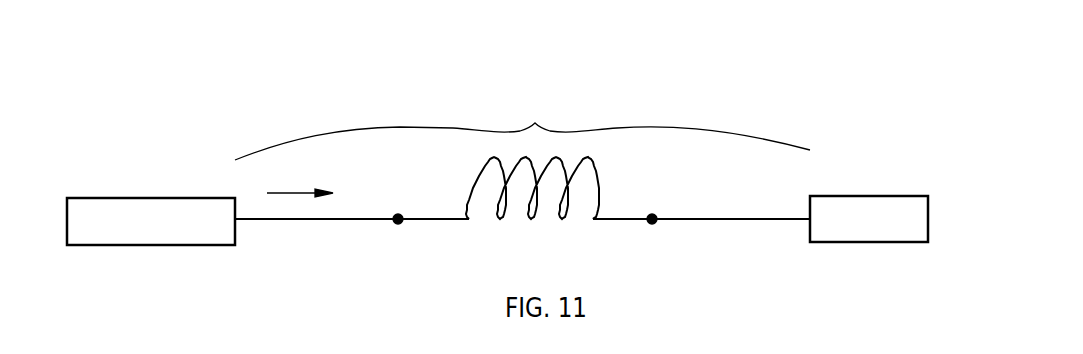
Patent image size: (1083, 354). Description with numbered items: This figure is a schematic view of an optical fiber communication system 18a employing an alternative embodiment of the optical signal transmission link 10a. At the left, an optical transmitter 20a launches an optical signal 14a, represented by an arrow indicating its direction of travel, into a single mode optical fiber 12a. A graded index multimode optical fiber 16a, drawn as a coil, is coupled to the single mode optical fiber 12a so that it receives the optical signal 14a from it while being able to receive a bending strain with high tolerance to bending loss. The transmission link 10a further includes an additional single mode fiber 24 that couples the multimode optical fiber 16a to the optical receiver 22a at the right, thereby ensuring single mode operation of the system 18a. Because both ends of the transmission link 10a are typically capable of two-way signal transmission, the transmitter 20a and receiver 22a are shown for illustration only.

The transmission link 10a is at (522, 128).
The single mode optical fiber 12a is at (345, 218).
The optical signal 14a is at (290, 193).
The multimode optical fiber 16a is at (591, 162).
The optical fiber communication system 18a is at (665, 73).
The transmitter 20a is at (120, 198).
The receiver 22a is at (893, 196).
The second node 24 is at (693, 218).